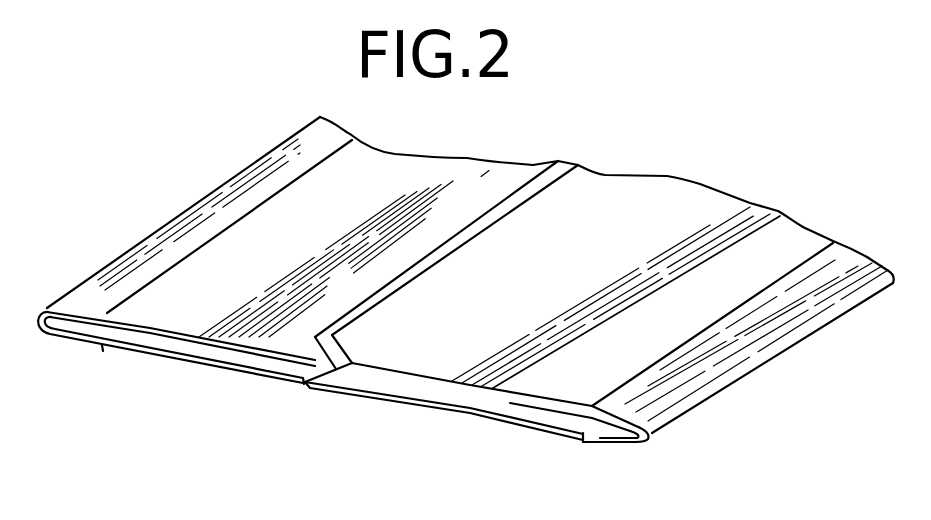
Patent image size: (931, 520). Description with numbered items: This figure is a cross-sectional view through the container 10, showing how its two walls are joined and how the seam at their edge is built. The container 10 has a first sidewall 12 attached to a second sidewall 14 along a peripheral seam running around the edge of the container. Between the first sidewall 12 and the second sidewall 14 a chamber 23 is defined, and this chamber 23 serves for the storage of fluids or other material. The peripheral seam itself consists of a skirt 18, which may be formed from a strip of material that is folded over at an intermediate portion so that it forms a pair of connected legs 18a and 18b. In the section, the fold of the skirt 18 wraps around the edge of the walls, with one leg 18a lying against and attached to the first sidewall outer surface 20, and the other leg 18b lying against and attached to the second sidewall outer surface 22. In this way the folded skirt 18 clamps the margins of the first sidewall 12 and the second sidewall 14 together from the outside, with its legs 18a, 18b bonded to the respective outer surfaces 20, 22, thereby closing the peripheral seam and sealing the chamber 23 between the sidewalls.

The container 10 is at (180, 188).
The first sidewall 12 is at (448, 383).
The second sidewall 14 is at (405, 401).
The skirt 18 is at (738, 379).
The leg 18a is at (692, 372).
The leg 18b is at (615, 443).
The first sidewall outer surface 20 is at (292, 250).
The second sidewall outer surface 22 is at (352, 399).
The chamber 23 is at (521, 421).